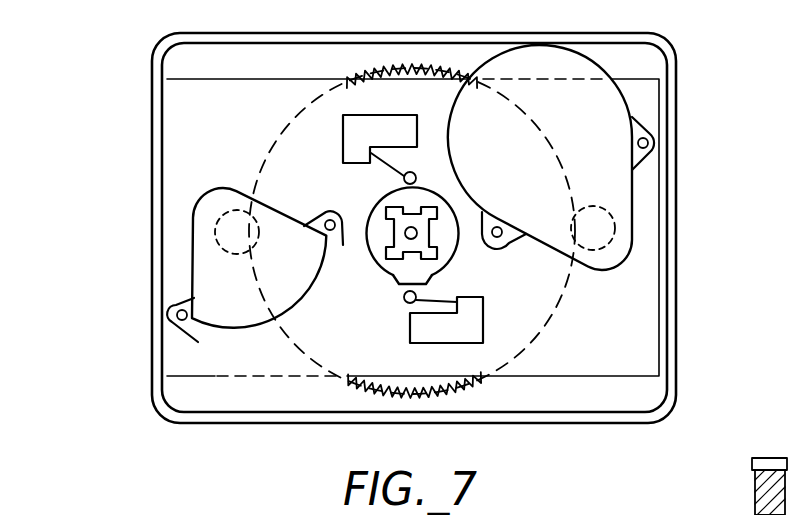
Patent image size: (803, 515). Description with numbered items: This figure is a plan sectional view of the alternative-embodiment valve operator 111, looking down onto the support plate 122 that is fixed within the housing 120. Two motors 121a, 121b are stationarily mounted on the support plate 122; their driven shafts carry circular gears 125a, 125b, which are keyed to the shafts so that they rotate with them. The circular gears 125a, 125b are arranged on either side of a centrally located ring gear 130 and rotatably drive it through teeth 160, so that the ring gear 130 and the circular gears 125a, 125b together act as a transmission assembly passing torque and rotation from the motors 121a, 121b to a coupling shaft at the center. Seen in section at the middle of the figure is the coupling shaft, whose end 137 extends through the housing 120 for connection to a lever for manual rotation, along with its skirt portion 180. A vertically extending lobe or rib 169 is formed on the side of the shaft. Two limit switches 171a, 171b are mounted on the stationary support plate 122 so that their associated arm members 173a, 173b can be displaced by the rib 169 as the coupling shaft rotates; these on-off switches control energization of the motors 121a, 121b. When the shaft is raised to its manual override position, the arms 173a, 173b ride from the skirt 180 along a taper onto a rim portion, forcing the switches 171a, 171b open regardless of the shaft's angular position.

The valve operator 111 is at (108, 159).
The housing 120 is at (689, 186).
The support plate 122 is at (222, 108).
The motor 121a is at (332, 302).
The motor 121b is at (551, 157).
The circular gear 125a is at (214, 232).
The circular gear 125b is at (615, 229).
The ring gear 130 is at (565, 296).
The end of coupling shaft 137 is at (436, 224).
The teeth 160 is at (424, 66).
The lobe or rib 169 is at (430, 283).
The limit switch 171a is at (483, 325).
The limit switch 171b is at (343, 127).
The arm member 173a is at (403, 307).
The arm member 173b is at (387, 163).
The skirt portion 180 is at (434, 194).